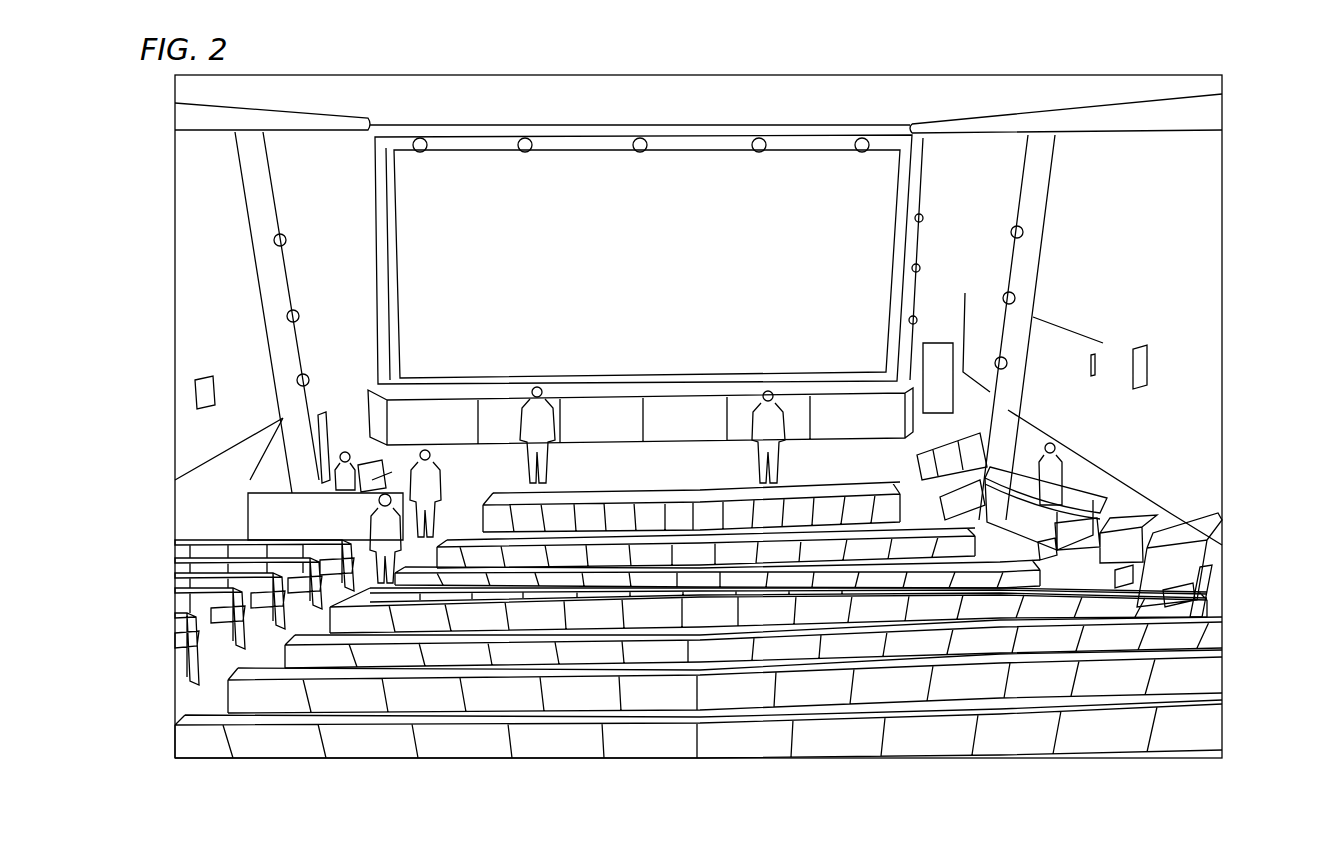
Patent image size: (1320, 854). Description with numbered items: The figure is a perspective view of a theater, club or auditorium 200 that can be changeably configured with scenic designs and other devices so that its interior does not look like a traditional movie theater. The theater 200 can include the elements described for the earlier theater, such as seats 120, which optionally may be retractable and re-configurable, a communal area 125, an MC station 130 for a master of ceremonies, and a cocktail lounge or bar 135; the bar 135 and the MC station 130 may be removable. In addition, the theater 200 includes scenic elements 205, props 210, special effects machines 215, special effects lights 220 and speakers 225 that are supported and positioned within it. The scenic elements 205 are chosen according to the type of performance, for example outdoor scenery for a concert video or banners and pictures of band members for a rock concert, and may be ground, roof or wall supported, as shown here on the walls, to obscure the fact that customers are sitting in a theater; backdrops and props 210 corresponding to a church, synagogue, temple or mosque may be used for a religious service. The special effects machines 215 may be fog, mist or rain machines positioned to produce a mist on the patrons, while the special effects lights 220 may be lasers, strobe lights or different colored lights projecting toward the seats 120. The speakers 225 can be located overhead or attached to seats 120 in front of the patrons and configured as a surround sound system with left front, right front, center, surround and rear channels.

The seats 120 is at (950, 733).
The communal area 125 is at (577, 485).
The MC station 130 is at (1045, 500).
The bar 135 is at (357, 478).
The theater 200 is at (425, 55).
The scenic elements 205 is at (1072, 384).
The props 210 is at (860, 420).
The special effects machines 215 is at (528, 140).
The special effects lights 220 is at (423, 140).
The speakers 225 is at (643, 140).